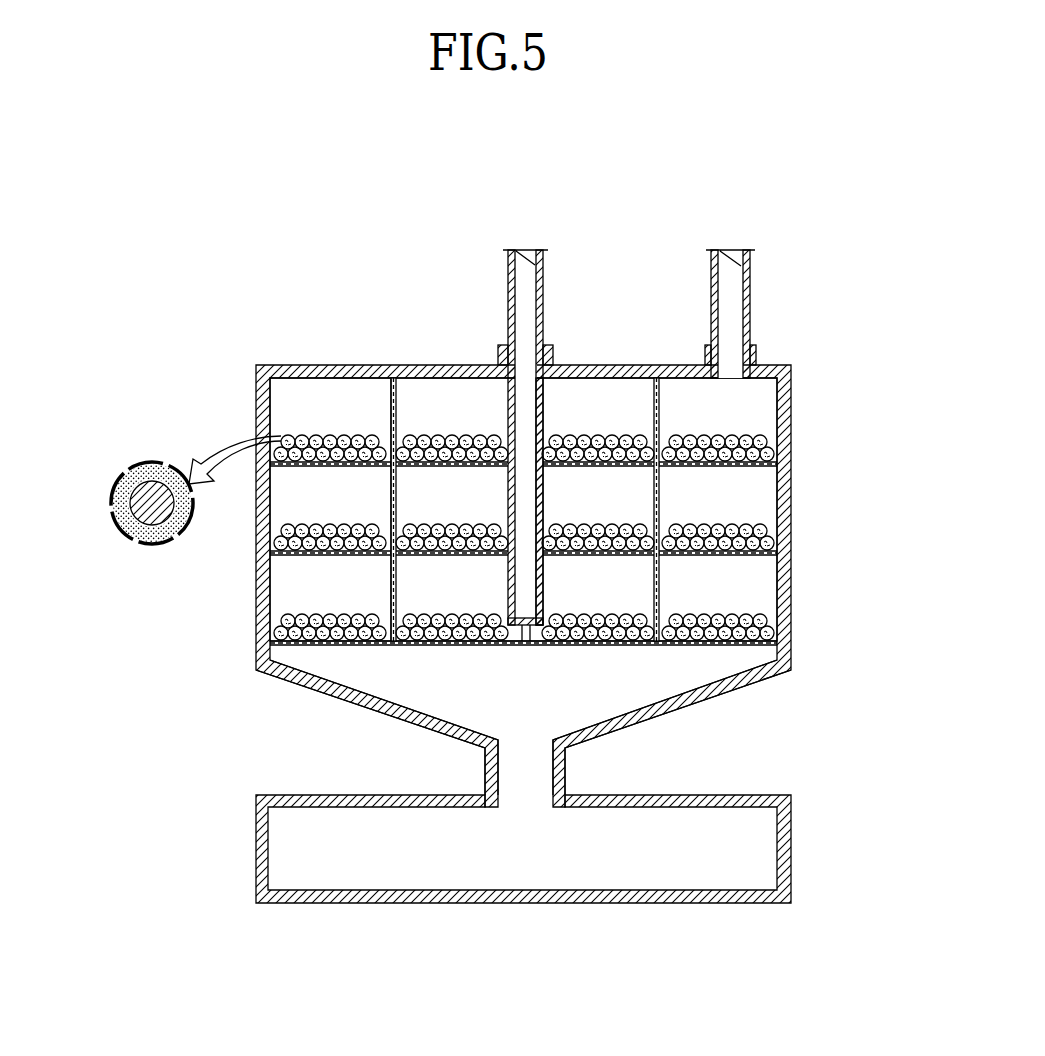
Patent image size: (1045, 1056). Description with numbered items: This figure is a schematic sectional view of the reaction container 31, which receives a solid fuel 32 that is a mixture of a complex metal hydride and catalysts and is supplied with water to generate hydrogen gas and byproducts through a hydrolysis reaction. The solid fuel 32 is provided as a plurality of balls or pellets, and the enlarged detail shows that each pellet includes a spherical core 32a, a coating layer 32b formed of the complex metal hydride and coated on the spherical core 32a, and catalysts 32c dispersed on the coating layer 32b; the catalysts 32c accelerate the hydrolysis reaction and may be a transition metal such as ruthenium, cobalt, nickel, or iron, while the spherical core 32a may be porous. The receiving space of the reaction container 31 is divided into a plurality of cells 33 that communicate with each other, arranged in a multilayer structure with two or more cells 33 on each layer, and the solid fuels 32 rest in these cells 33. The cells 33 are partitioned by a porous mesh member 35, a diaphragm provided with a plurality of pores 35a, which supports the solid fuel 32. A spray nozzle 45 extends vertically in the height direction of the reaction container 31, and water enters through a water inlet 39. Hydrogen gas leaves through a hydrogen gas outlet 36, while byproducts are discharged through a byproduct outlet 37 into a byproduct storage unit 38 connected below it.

The reaction container 31 is at (821, 319).
The solid fuel 32 is at (285, 437).
The spherical core 32a is at (150, 522).
The coating layer 32b is at (113, 483).
The catalysts 32c is at (150, 462).
The cells 33 is at (349, 406).
The porous mesh member 35 is at (396, 392).
The pores 35a is at (397, 424).
The hydrogen gas outlet 36 is at (757, 353).
The byproduct outlet 37 is at (700, 700).
The byproduct storage unit 38 is at (790, 851).
The water inlet 39 is at (545, 352).
The spray nozzle 45 is at (550, 397).